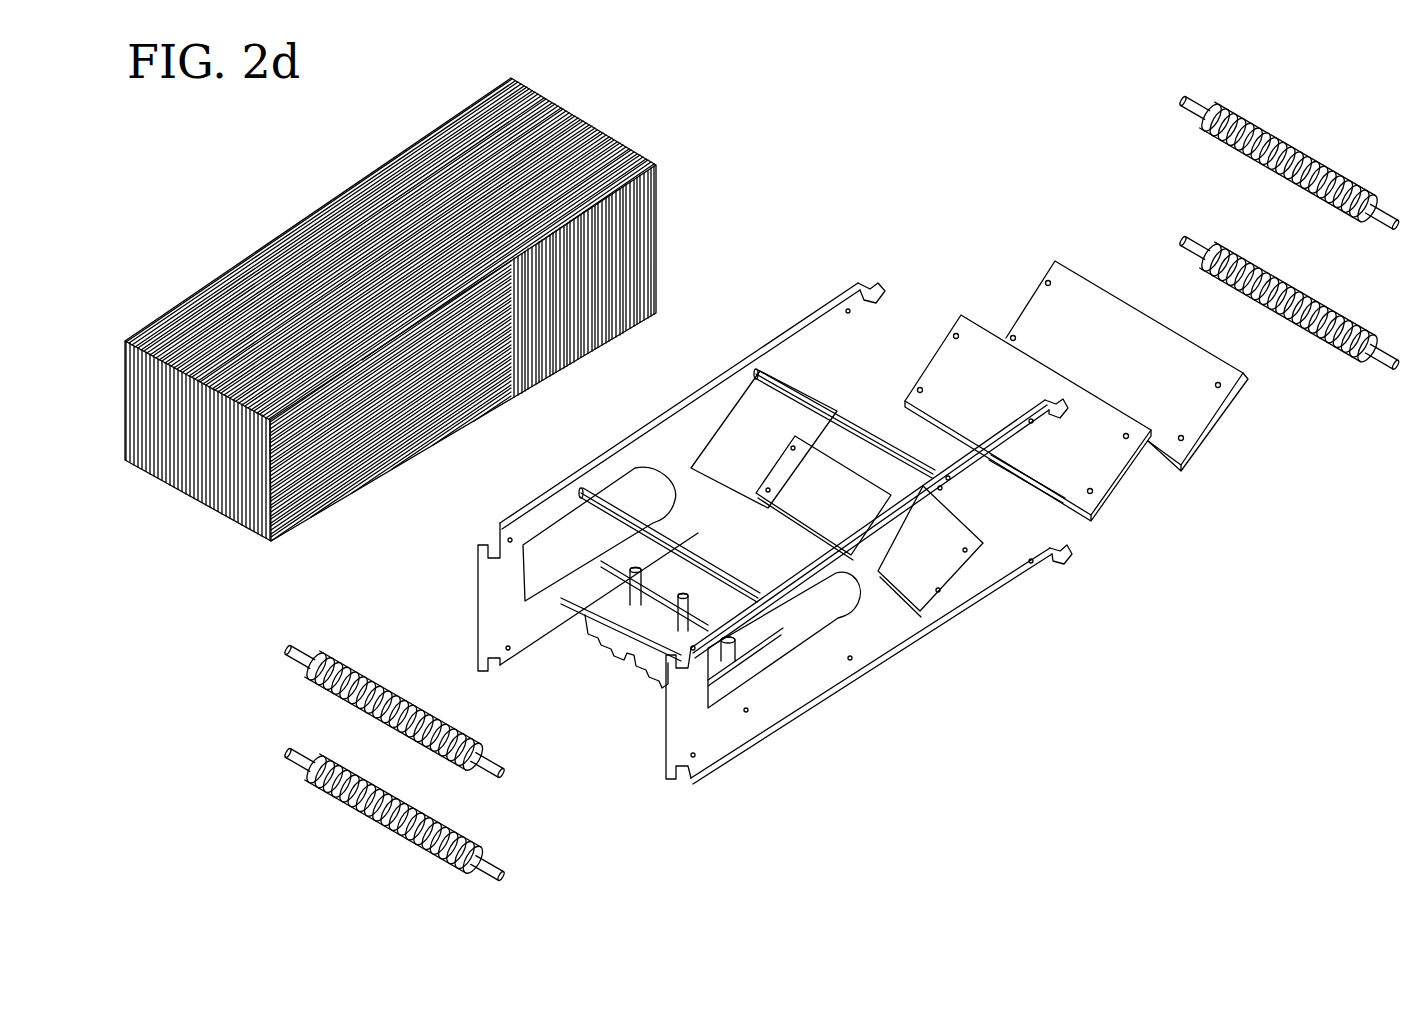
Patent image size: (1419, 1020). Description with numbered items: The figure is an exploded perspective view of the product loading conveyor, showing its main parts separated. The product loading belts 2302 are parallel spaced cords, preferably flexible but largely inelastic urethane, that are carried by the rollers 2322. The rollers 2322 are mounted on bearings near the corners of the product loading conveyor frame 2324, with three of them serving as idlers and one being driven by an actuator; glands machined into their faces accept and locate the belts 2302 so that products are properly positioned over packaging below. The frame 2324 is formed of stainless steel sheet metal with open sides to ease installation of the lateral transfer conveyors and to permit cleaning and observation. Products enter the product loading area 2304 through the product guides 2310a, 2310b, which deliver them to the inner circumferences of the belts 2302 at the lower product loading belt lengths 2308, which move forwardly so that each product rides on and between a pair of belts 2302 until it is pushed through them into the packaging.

The product loading belts 2302 is at (390, 309).
The product loading area 2304 is at (387, 398).
The lower product loading belt lengths 2308 is at (500, 372).
The product guide 2310a is at (1190, 397).
The product guide 2310b is at (1098, 453).
The rollers 2322 is at (457, 757).
The product loading conveyor frame 2324 is at (875, 637).